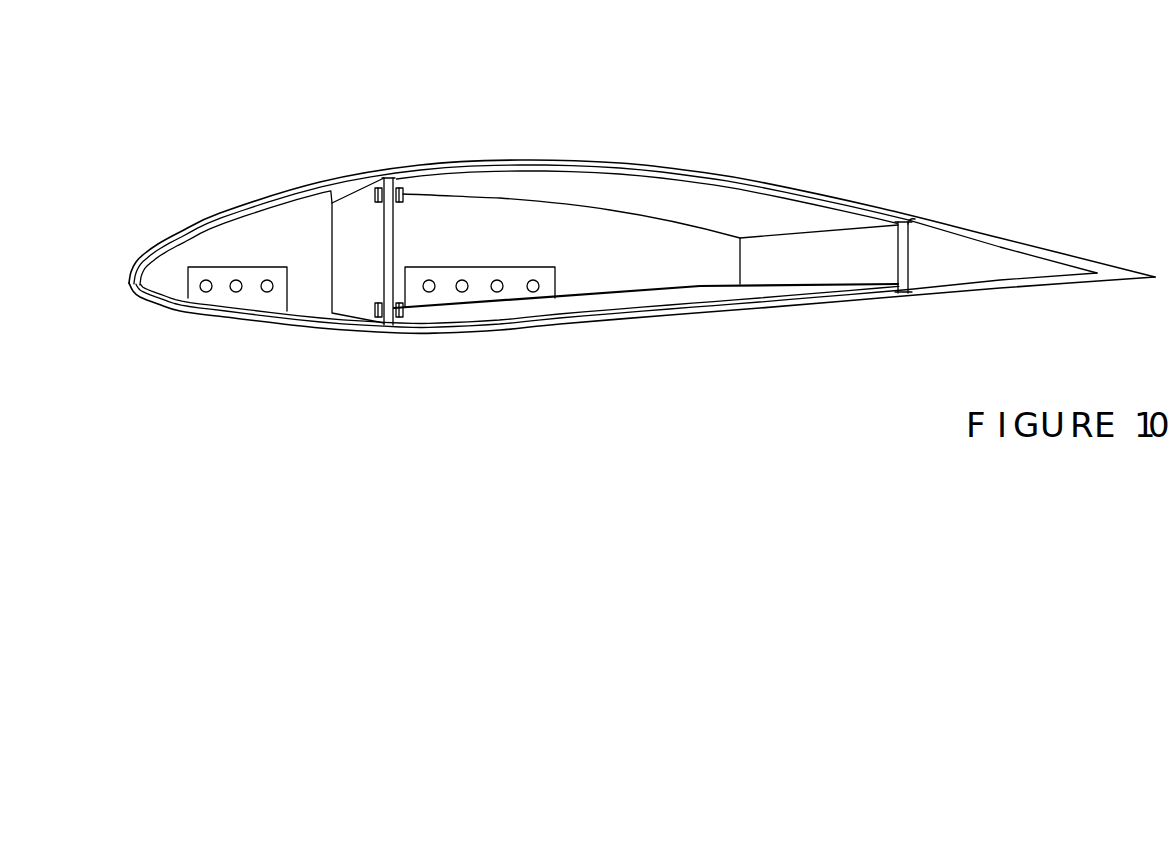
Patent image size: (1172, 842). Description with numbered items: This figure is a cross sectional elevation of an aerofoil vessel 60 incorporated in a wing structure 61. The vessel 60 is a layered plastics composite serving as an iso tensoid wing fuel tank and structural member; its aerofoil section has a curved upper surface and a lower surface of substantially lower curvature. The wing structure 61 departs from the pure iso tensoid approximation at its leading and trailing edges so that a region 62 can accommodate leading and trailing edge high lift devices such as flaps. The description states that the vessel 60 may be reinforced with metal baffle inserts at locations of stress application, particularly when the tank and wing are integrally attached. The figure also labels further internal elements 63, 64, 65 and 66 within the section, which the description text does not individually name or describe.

The aerofoil vessel 60 is at (458, 174).
The wing structure 61 is at (853, 170).
The region for leading and trailing edge high lift devices 62 is at (993, 230).
The rear mounting bracket 63 is at (441, 293).
The front mounting bracket 64 is at (250, 300).
The lower inner skin 65 is at (600, 273).
The rib plate 66 is at (307, 290).